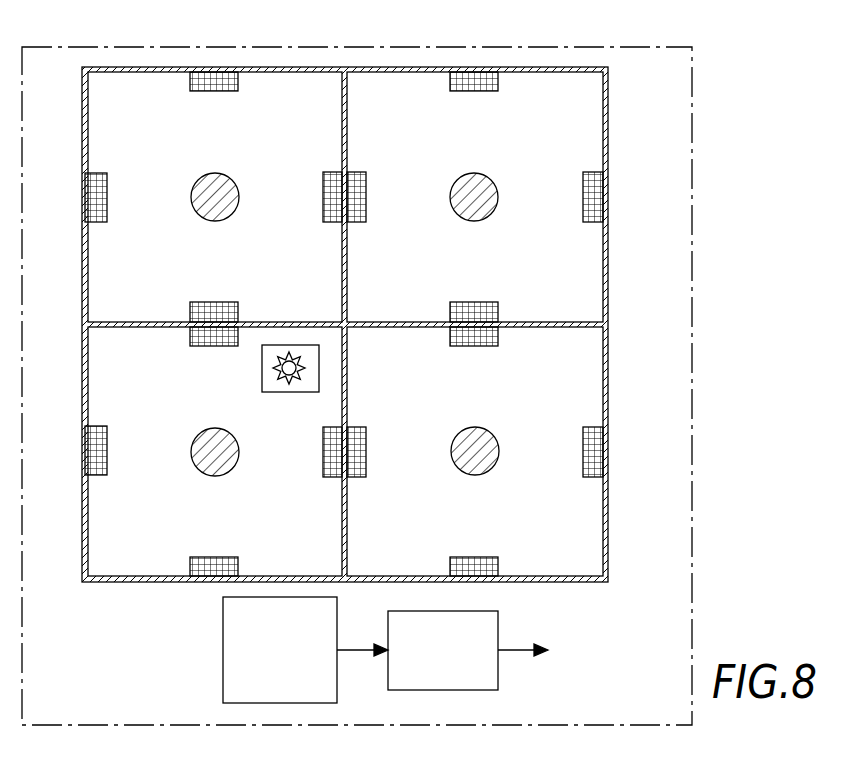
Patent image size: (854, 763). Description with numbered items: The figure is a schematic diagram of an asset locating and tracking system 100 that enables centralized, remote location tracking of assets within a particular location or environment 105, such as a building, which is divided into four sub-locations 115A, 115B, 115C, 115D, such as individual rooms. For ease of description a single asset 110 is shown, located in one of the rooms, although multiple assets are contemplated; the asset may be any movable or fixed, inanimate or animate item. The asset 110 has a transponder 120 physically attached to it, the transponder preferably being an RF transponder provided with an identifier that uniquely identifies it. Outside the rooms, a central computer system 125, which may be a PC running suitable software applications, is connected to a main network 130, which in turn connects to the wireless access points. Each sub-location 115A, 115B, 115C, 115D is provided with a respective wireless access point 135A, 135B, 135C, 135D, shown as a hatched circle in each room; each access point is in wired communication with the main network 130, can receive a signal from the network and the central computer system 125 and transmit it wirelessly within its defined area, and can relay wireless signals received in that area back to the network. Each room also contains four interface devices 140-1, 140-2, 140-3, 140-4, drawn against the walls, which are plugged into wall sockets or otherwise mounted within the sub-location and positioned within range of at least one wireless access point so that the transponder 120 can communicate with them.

The asset locating and tracking system 100 is at (712, 72).
The particular location or environment 105 is at (608, 105).
The asset 110 is at (262, 360).
The sub-location 115A is at (100, 280).
The sub-location 115B is at (608, 258).
The sub-location 115C is at (130, 553).
The sub-location 115D is at (595, 520).
The transponder 120 is at (287, 382).
The central computer system 125 is at (223, 614).
The main network 130 is at (470, 690).
The wireless access point 135A is at (197, 211).
The wireless access point 135B is at (457, 214).
The wireless access point 135C is at (196, 465).
The wireless access point 135D is at (458, 470).
The interface device 140-1 is at (238, 305).
The interface device 140-2 is at (106, 178).
The interface device 140-3 is at (224, 90).
The interface device 140-4 is at (330, 186).